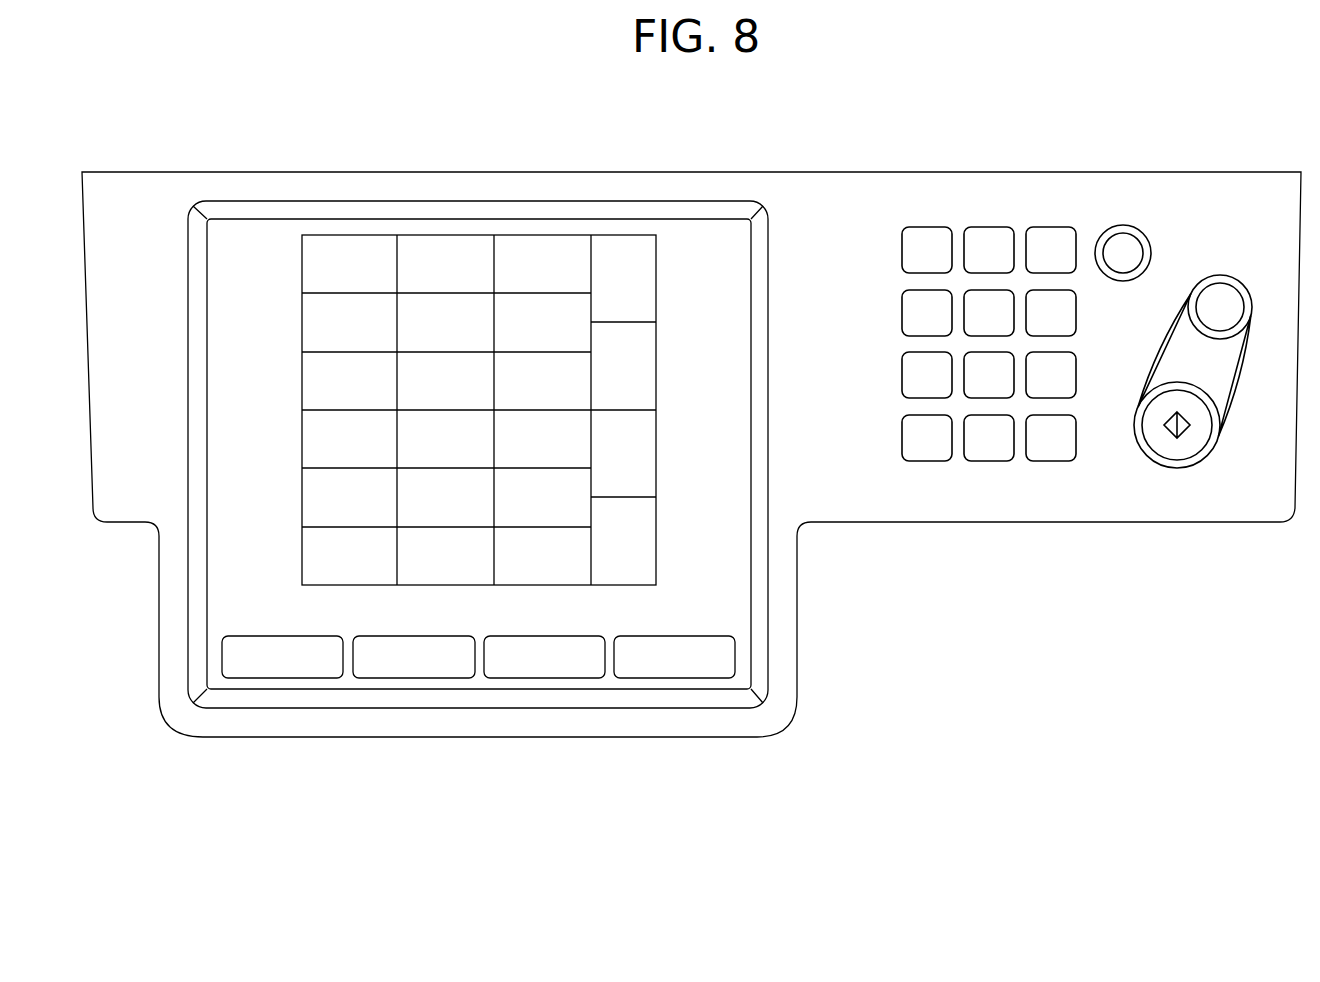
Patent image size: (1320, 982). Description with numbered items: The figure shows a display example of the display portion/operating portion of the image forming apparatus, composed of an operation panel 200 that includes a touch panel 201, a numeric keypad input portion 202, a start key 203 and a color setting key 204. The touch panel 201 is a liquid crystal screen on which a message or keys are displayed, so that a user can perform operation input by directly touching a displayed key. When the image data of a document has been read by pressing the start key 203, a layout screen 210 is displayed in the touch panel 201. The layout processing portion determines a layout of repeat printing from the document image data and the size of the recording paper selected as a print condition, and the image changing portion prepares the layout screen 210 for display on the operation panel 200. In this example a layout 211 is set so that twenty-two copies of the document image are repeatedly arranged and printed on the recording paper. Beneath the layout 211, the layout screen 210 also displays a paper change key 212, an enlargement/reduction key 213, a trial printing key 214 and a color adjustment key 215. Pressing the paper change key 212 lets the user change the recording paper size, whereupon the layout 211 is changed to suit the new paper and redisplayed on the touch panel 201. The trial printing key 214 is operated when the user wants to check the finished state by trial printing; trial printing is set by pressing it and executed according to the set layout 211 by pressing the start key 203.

The operation panel 200 is at (1188, 172).
The touch panel 201 is at (768, 432).
The numeric keypad input portion 202 is at (1000, 206).
The start key 203 is at (1200, 465).
The color setting key 204 is at (1220, 275).
The layout screen 210 is at (752, 310).
The layout 211 is at (462, 235).
The paper change key 212 is at (278, 678).
The enlargement/reduction key 213 is at (408, 678).
The trial printing key 214 is at (543, 678).
The color adjustment key 215 is at (673, 678).